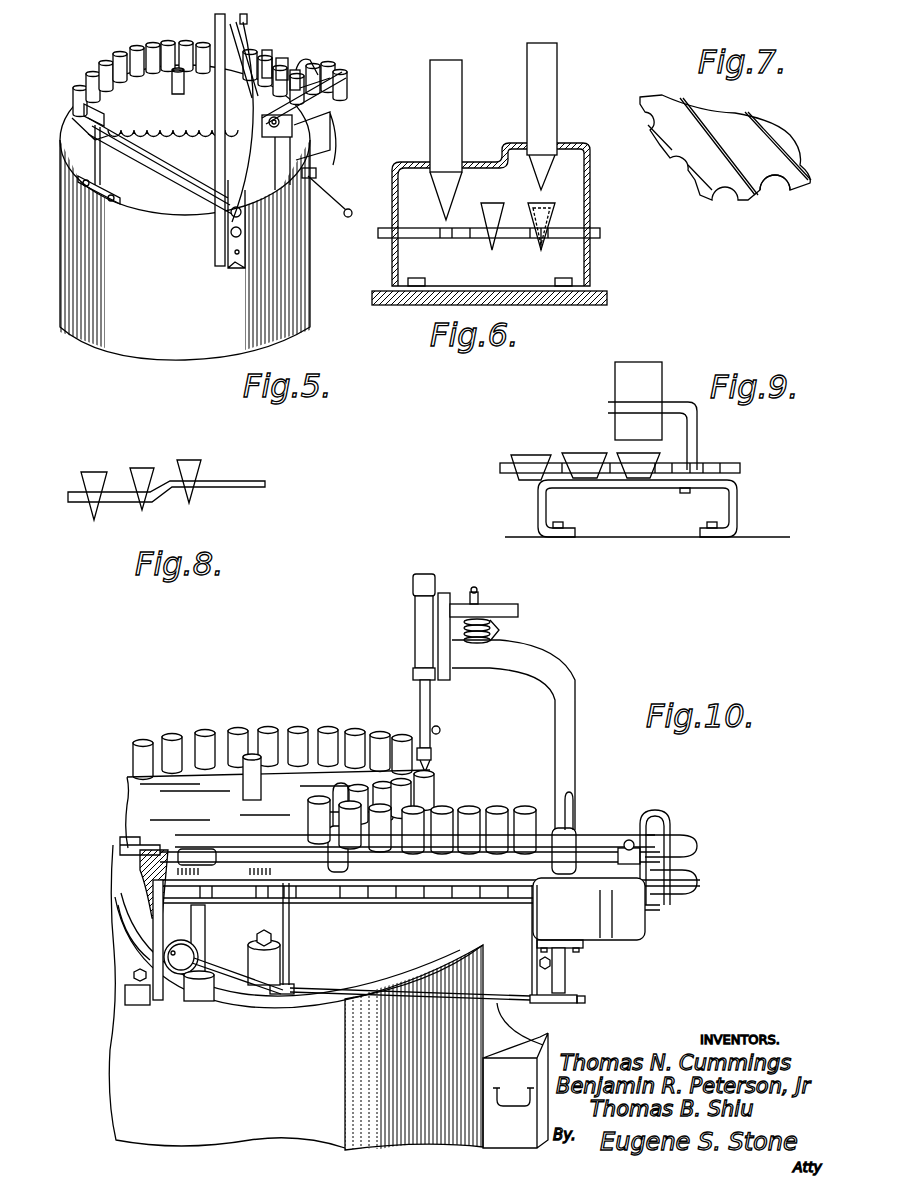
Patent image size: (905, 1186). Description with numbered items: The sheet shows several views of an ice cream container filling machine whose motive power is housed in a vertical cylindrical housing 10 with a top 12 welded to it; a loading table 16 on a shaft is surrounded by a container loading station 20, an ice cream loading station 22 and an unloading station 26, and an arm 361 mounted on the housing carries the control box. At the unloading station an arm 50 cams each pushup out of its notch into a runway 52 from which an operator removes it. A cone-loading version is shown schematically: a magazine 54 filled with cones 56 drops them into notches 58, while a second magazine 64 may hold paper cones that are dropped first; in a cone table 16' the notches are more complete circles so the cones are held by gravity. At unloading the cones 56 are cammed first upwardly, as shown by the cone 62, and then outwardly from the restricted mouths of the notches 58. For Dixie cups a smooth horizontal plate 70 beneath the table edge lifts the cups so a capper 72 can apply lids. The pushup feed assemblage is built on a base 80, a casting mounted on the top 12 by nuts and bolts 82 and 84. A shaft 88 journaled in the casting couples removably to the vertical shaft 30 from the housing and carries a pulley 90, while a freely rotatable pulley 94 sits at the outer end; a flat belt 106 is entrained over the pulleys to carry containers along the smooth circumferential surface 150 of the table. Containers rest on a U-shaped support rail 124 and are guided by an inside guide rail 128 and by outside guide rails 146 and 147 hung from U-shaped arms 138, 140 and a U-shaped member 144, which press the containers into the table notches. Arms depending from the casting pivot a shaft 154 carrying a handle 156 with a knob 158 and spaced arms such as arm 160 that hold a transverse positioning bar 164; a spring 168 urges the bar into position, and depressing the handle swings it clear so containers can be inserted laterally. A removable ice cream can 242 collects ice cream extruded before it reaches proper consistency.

In FIG. 6, the housing 10 is at (605, 300).
In FIG. 10, the housing 10 is at (126, 1085).
In FIG. 5, the top 12 is at (72, 167).
In FIG. 6, the top 12 is at (598, 290).
In FIG. 10, the top 12 is at (118, 963).
In FIG. 8, the loading table 16 is at (151, 488).
In FIG. 9, the loading table 16 is at (632, 453).
In FIG. 6, the cone table 16' is at (489, 238).
In FIG. 7, the cone table 16' is at (789, 201).
In FIG. 5, the container loading station 20 is at (322, 52).
In FIG. 5, the ice cream loading station 22 is at (257, 30).
In FIG. 10, the ice cream loading station 22 is at (566, 668).
In FIG. 5, the unloading station 26 is at (78, 132).
In FIG. 10, the vertical shaft 30 is at (199, 1001).
In FIG. 5, the arm 50 is at (103, 122).
In FIG. 5, the runway 52 is at (170, 162).
In FIG. 6, the magazine 54 is at (560, 58).
In FIG. 6, the cones 56 is at (547, 179).
In FIG. 6, the notches 58 is at (543, 242).
In FIG. 7, the notches 58 is at (728, 197).
In FIG. 8, the cone 62 is at (132, 469).
In FIG. 6, the second magazine 64 is at (462, 60).
In FIG. 9, the horizontal plate 70 is at (623, 488).
In FIG. 9, the capper 72 is at (615, 387).
In FIG. 10, the base 80 is at (130, 1004).
In FIG. 10, the nuts and bolts 82 is at (133, 977).
In FIG. 10, the nuts and bolts 84 is at (272, 948).
In FIG. 10, the shaft 88 is at (207, 926).
In FIG. 10, the pulley 90 is at (135, 866).
In FIG. 10, the freely rotatable pulley 94 is at (606, 850).
In FIG. 10, the belt 106 is at (652, 915).
In FIG. 10, the support rail 124 is at (665, 909).
In FIG. 10, the inside guide rail 128 is at (593, 832).
In FIG. 10, the U-shaped arm 138 is at (262, 784).
In FIG. 10, the U-shaped arm 140 is at (574, 798).
In FIG. 10, the U-shaped member 144 is at (671, 822).
In FIG. 10, the outside guide rail 146 is at (698, 846).
In FIG. 10, the outside guide rail 147 is at (698, 882).
In FIG. 10, the circumferential surface 150 is at (236, 990).
In FIG. 10, the shaft 154 is at (346, 989).
In FIG. 5, the handle 156 is at (317, 177).
In FIG. 5, the knob 158 is at (346, 217).
In FIG. 5, the arm 160 is at (336, 128).
In FIG. 10, the arm 160 is at (292, 967).
In FIG. 10, the positioning bar 164 is at (586, 893).
In FIG. 10, the spring 168 is at (571, 968).
In FIG. 10, the removable ice cream can 242 is at (548, 1042).
In FIG. 5, the arm 361 is at (215, 24).